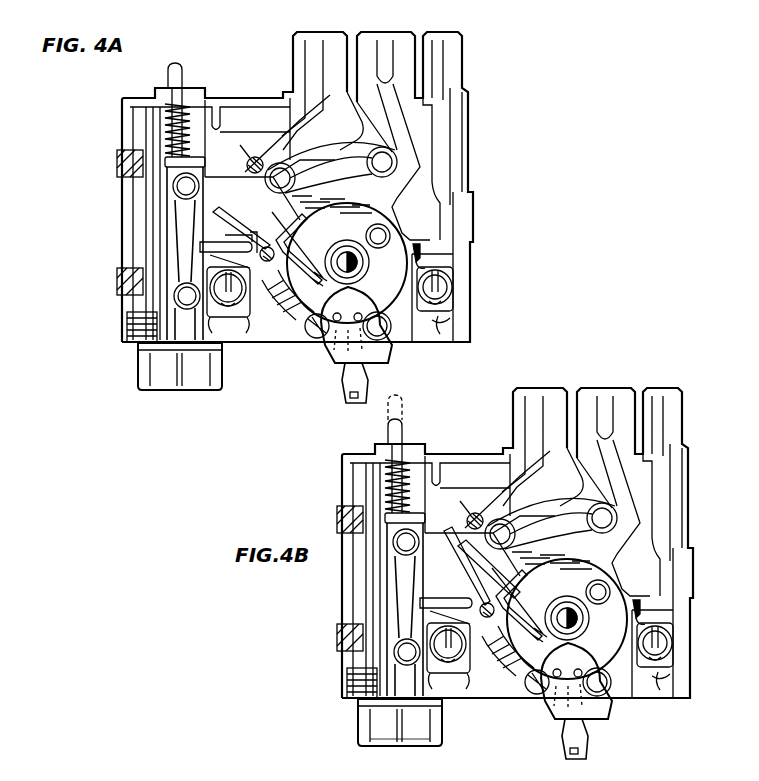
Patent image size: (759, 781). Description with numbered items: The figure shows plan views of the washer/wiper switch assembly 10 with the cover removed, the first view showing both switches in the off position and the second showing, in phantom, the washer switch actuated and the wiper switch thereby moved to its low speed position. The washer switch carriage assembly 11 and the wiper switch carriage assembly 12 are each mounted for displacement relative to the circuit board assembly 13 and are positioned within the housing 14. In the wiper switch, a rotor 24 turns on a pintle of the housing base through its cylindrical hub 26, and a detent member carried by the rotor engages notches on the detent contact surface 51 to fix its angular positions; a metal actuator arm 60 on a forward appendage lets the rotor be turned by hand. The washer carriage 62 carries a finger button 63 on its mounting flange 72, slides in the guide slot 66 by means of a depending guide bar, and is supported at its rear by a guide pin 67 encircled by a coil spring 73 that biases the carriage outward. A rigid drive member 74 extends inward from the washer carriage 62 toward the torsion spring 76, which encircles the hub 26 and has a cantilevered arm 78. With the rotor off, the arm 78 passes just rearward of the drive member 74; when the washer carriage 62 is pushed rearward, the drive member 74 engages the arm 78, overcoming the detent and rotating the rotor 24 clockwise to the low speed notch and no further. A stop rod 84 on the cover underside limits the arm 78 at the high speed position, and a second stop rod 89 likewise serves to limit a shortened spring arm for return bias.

In FIG. 4A, the washer/wiper switch assembly 10 is at (95, 140).
In FIG. 4A, the washer switch carriage assembly 11 is at (143, 390).
In FIG. 4B, the washer switch carriage assembly 11 is at (422, 728).
In FIG. 4A, the wiper switch carriage assembly 12 is at (362, 199).
In FIG. 4B, the wiper switch carriage assembly 12 is at (551, 527).
In FIG. 4A, the circuit board assembly 13 is at (465, 60).
In FIG. 4B, the circuit board assembly 13 is at (517, 520).
In FIG. 4A, the housing 14 is at (122, 232).
In FIG. 4B, the housing 14 is at (332, 579).
In FIG. 4A, the rotor 24 is at (405, 236).
In FIG. 4B, the rotor 24 is at (638, 594).
In FIG. 4A, the cylindrical hub 26 is at (364, 266).
In FIG. 4B, the cylindrical hub 26 is at (567, 619).
In FIG. 4A, the detent contact surface 51 is at (298, 322).
In FIG. 4B, the detent contact surface 51 is at (504, 675).
In FIG. 4A, the actuator arm 60 is at (344, 388).
In FIG. 4B, the actuator arm 60 is at (560, 701).
In FIG. 4B, the washer carriage 62 is at (363, 597).
In FIG. 4B, the finger button 63 is at (385, 747).
In FIG. 4B, the guide slot 66 is at (364, 585).
In FIG. 4B, the guide pin 67 is at (418, 454).
In FIG. 4B, the mounting flange 72 is at (353, 696).
In FIG. 4B, the coil spring 73 is at (412, 491).
In FIG. 4A, the drive member 74 is at (252, 236).
In FIG. 4B, the drive member 74 is at (470, 574).
In FIG. 4A, the torsion spring 76 is at (366, 247).
In FIG. 4B, the torsion spring 76 is at (598, 592).
In FIG. 4A, the cantilevered arm 78 is at (227, 210).
In FIG. 4B, the cantilevered arm 78 is at (466, 557).
In FIG. 4A, the stop rod 84 is at (258, 156).
In FIG. 4B, the stop rod 84 is at (471, 505).
In FIG. 4A, the stop rod 89 is at (285, 249).
In FIG. 4B, the stop rod 89 is at (508, 605).